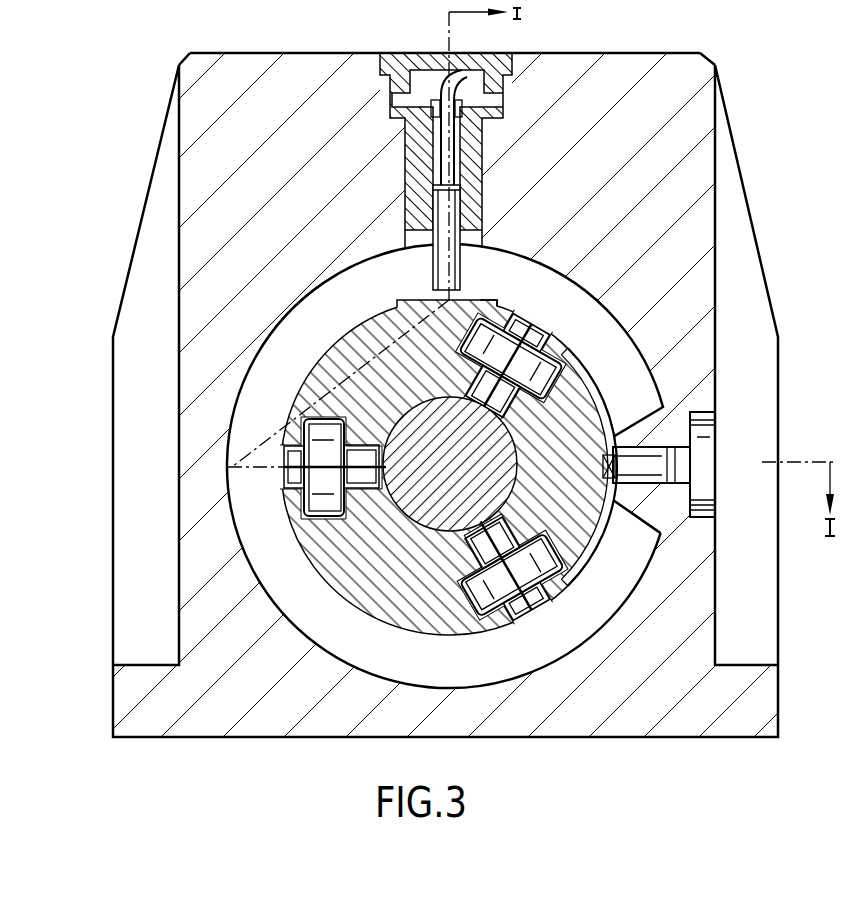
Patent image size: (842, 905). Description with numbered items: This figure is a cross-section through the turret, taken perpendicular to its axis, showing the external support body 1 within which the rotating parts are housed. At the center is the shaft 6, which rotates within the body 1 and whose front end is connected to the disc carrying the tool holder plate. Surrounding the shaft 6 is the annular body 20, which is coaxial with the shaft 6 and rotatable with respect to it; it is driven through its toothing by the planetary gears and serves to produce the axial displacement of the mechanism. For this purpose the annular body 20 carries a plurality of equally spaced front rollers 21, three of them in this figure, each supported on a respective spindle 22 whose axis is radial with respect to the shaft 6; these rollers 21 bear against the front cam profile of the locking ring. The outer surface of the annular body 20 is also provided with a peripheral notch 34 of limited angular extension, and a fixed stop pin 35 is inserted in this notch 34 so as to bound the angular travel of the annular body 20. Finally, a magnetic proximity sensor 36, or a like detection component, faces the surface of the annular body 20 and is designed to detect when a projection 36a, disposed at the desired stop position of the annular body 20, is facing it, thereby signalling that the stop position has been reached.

The external support body 1 is at (187, 726).
The shaft 6 is at (430, 508).
The annular body 20 is at (353, 572).
The rollers 21 is at (297, 515).
The spindles 22 is at (458, 566).
The peripheral notch 34 is at (591, 550).
The fixed stop pin 35 is at (641, 472).
The magnetic proximity sensor 36 is at (434, 256).
The projection 36a is at (484, 303).